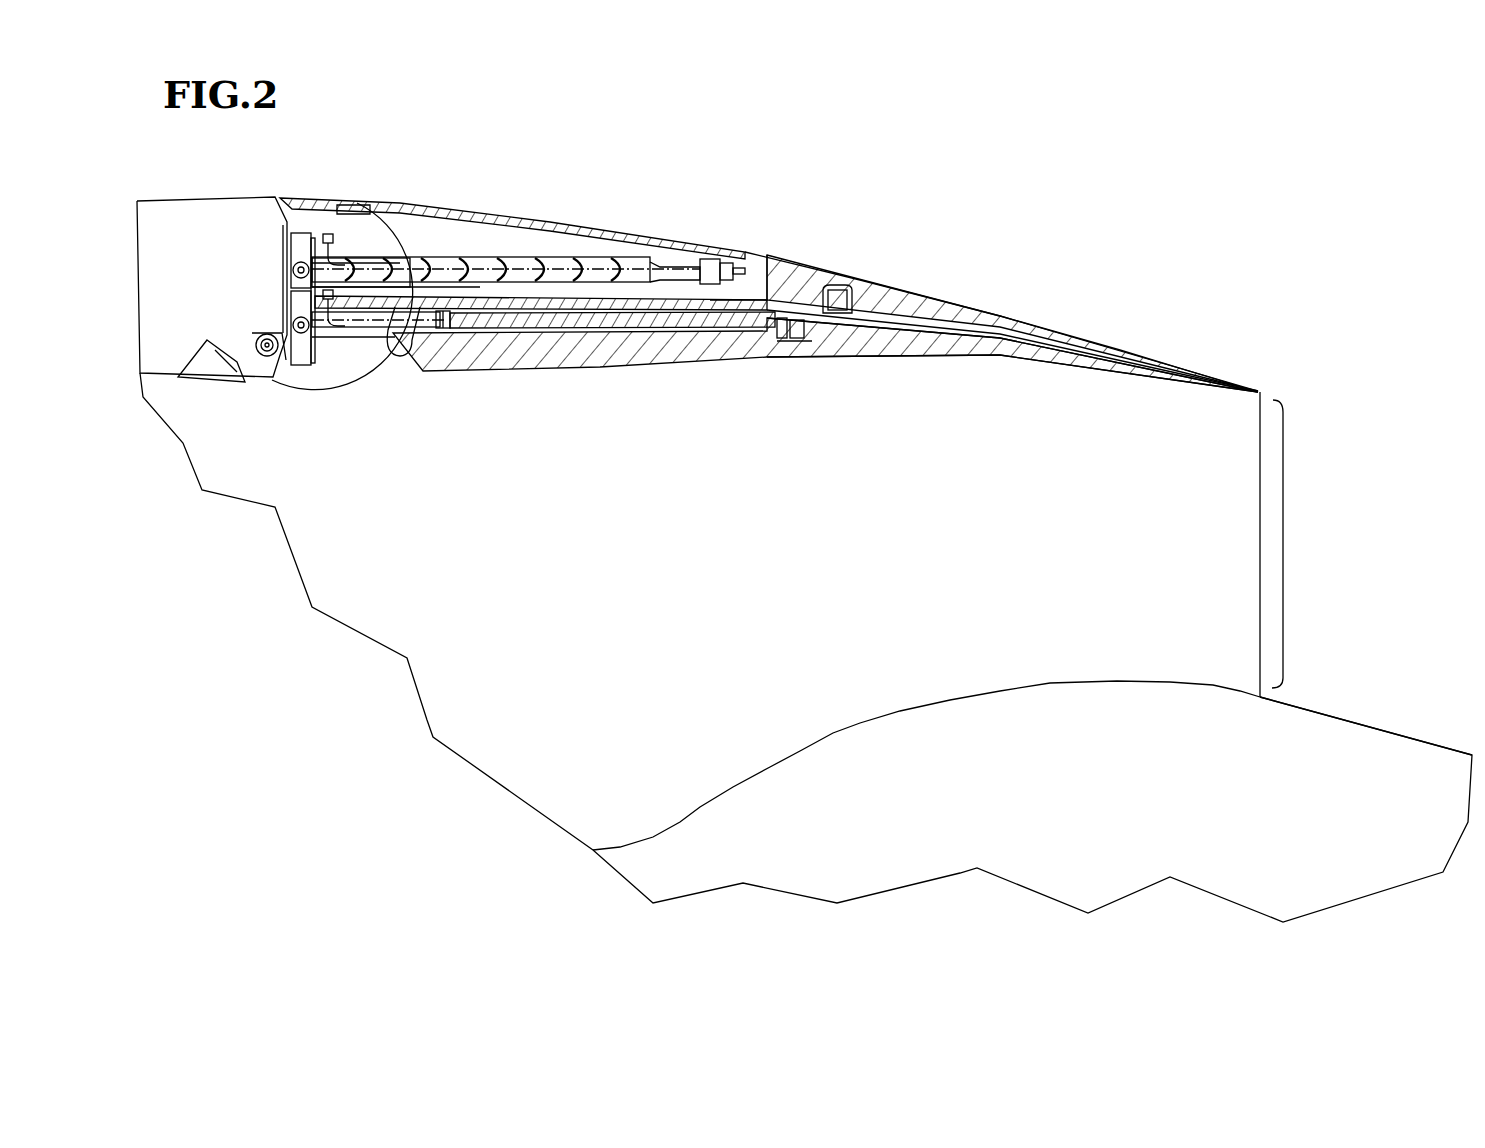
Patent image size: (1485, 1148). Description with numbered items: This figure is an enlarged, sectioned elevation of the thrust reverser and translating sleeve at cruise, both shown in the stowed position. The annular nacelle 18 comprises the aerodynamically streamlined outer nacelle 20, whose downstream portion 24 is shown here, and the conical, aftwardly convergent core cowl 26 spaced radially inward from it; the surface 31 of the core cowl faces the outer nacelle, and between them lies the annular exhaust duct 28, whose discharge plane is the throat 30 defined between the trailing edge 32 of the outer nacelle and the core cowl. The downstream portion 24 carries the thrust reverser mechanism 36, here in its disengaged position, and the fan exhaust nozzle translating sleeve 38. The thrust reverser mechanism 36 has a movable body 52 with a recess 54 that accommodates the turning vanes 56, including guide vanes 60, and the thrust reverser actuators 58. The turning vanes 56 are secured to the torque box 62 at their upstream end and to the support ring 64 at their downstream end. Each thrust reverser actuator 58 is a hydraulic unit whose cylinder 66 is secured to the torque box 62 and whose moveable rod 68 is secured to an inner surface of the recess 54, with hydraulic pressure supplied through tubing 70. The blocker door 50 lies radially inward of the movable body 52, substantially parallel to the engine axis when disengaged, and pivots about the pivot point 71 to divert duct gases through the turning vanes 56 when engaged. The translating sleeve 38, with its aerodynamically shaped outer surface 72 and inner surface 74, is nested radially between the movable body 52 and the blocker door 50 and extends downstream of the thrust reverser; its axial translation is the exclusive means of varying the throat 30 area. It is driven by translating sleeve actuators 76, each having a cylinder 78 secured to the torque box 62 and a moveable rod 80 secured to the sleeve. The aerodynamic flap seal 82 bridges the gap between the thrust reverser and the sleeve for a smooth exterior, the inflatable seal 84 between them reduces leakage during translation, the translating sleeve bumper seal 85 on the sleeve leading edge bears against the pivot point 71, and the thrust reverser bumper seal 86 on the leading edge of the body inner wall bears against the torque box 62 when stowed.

The annular nacelle 18 is at (690, 180).
The outer nacelle 20 is at (230, 188).
The downstream portion 24 is at (870, 256).
The core cowl 26 is at (1347, 718).
The exhaust duct 28 is at (632, 581).
The throat 30 is at (1299, 544).
The core cowl surface 31 is at (1087, 682).
The trailing edge 32 is at (1270, 393).
The thrust reverser mechanism 36 is at (600, 218).
The fan exhaust nozzle translating sleeve 38 is at (1190, 351).
The thrust reverser blocker door 50 is at (602, 367).
The thrust reverser movable body 52 is at (802, 290).
The recess 54 is at (452, 228).
The turning vanes 56 is at (470, 258).
The thrust reverser actuator 58 is at (352, 246).
The guide vanes 60 is at (543, 260).
The torque box 62 is at (307, 387).
The support ring 64 is at (718, 262).
The cylinder 66 is at (393, 203).
The moveable rod 68 is at (728, 260).
The tubing 70 is at (323, 205).
The pivot point 71 is at (398, 350).
The outer surface 72 is at (1095, 338).
The inner surface 74 is at (1080, 365).
The translating sleeve actuator 76 is at (343, 345).
The cylinder 78 is at (337, 355).
The moveable rod 80 is at (820, 337).
The aerodynamic flap seal 82 is at (983, 308).
The inflatable seal 84 is at (840, 312).
The translating sleeve bumper seal 85 is at (442, 338).
The thrust reverser bumper seal 86 is at (350, 345).